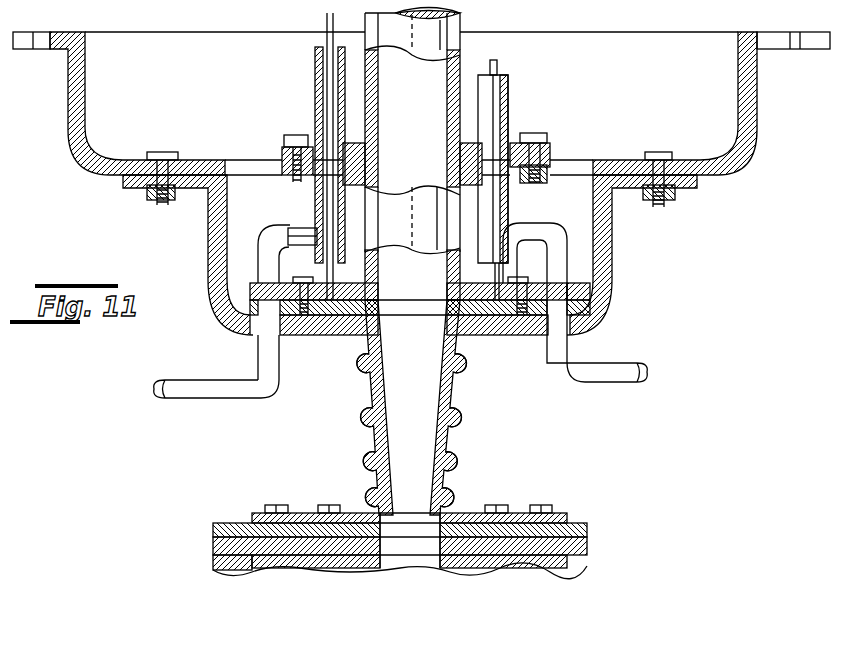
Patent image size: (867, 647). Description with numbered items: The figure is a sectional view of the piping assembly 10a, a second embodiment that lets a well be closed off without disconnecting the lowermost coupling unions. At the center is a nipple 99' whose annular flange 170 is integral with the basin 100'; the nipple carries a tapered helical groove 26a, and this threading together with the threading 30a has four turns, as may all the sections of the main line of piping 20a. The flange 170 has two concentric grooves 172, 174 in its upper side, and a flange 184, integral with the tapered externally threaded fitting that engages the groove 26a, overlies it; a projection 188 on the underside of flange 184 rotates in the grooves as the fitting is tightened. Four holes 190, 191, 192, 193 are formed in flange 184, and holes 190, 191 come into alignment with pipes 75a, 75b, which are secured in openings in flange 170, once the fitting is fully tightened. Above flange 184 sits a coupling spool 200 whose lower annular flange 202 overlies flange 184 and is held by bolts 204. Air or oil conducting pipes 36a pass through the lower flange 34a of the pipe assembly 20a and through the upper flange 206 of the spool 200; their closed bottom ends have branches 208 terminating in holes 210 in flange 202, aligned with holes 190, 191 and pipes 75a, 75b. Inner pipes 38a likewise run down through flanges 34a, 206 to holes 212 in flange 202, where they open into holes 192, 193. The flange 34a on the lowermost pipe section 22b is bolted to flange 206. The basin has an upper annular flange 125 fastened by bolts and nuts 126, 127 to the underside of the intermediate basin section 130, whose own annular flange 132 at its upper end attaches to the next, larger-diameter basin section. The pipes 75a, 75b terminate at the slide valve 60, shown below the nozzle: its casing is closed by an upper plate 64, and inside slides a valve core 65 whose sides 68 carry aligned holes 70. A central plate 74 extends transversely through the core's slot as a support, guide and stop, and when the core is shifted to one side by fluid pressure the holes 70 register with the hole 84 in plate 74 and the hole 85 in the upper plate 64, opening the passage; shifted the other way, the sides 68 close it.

The assembly 10a is at (117, 381).
The pipe assembly 20a is at (364, 97).
The lowermost pipe section 22b is at (437, 38).
The tapered helical groove 26a is at (457, 417).
The helical threading 30a is at (465, 365).
The lower flange 34a is at (550, 148).
The air or oil conducting pipes 36a is at (315, 57).
The inner pipes 38a is at (327, 15).
The slide valve 60 is at (583, 512).
The upper plate 64 is at (243, 523).
The valve core 65 is at (240, 577).
The sides of the core 68 is at (303, 553).
The aligned holes 70 is at (407, 553).
The central plate 74 is at (327, 568).
The pipe 75a is at (600, 363).
The pipe 75b is at (212, 400).
The hole 84 is at (410, 560).
The hole 85 is at (415, 522).
The nipple 99' is at (434, 430).
The basin 100' is at (410, 271).
The upper annular flange 125 is at (185, 197).
The bolt 126 is at (655, 208).
The nut 127 is at (677, 188).
The intermediate basin section 130 is at (723, 107).
The annular flange 132 is at (812, 50).
The annular flange 170 is at (323, 335).
The concentric groove 172 is at (298, 340).
The concentric groove 174 is at (488, 332).
The flange 184 is at (343, 390).
The projection 188 is at (281, 393).
The hole 190 is at (590, 320).
The hole 191 is at (243, 328).
The hole 192 is at (495, 301).
The hole 193 is at (343, 290).
The coupling spool 200 is at (433, 213).
The lower annular flange 202 is at (252, 280).
The bolts 204 is at (532, 267).
The upper flange 206 is at (550, 158).
The branch pipes 208 is at (553, 263).
The holes 210 is at (570, 288).
The holes 212 is at (490, 290).